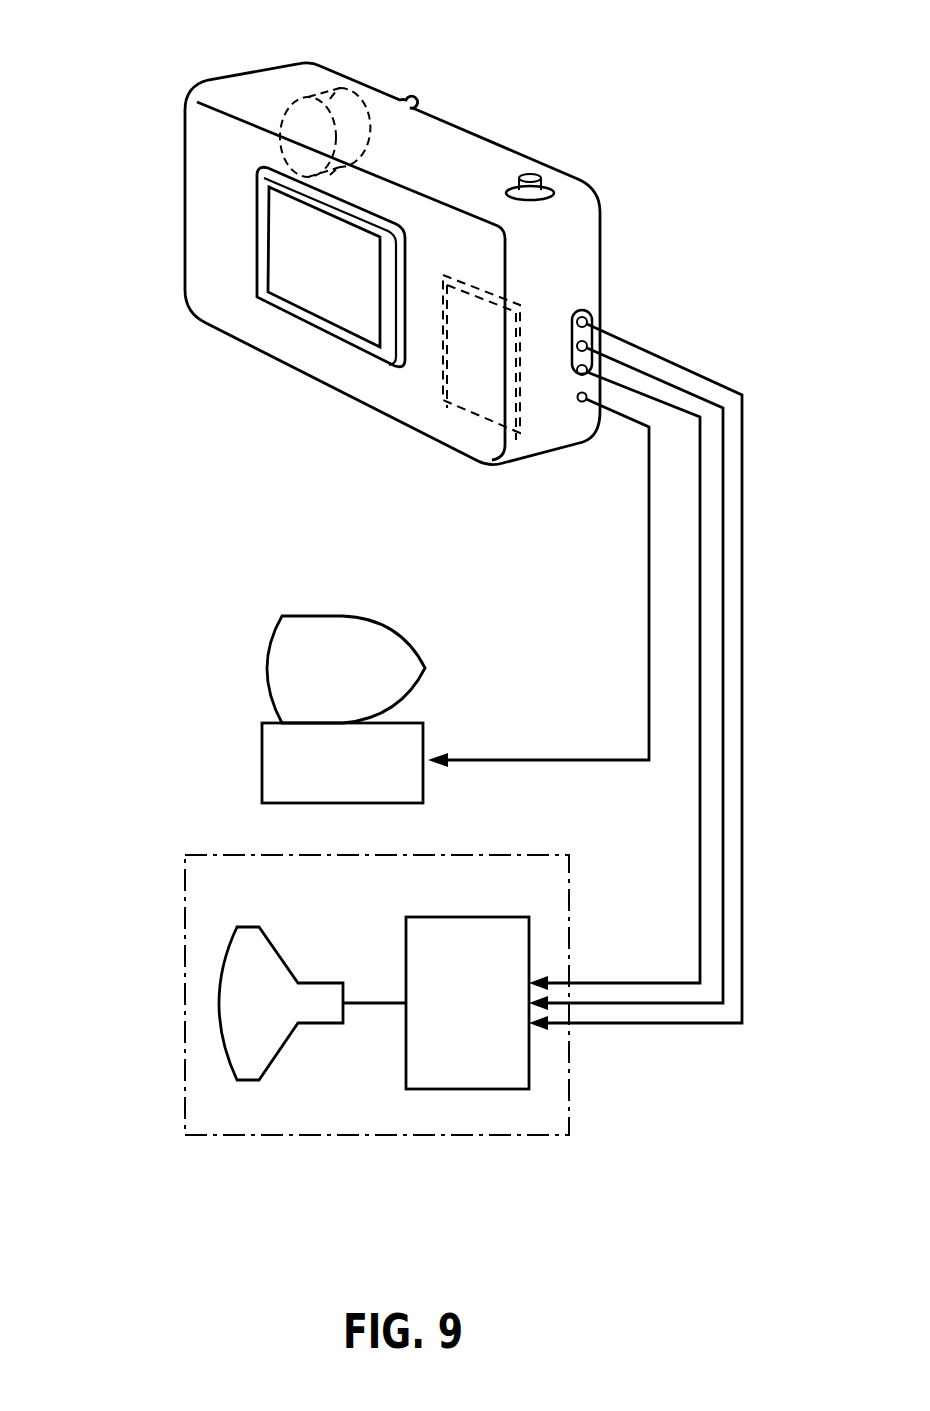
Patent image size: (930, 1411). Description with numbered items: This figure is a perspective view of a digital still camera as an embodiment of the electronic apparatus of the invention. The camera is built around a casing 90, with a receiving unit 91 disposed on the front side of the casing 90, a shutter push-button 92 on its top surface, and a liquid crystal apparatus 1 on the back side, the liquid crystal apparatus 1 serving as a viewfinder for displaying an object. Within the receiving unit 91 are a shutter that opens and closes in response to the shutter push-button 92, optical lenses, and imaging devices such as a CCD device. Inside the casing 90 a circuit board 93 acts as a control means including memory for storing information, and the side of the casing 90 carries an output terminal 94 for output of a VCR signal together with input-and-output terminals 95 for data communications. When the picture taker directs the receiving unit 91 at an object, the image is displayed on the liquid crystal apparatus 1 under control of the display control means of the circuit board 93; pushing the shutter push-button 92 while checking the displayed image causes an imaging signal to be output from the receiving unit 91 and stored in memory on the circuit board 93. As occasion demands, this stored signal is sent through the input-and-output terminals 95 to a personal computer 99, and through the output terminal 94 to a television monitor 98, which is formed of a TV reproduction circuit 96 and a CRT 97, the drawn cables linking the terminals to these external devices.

The liquid crystal apparatus 1 is at (314, 267).
The casing 90 is at (442, 132).
The receiving unit 91 is at (348, 94).
The shutter push-button 92 is at (530, 175).
The circuit board 93 is at (428, 360).
The output terminal 94 is at (590, 318).
The input-and-output terminals 95 is at (583, 402).
The TV reproduction circuit 96 is at (448, 1089).
The CRT 97 is at (250, 1080).
The television monitor 98 is at (183, 960).
The personal computer 99 is at (262, 660).